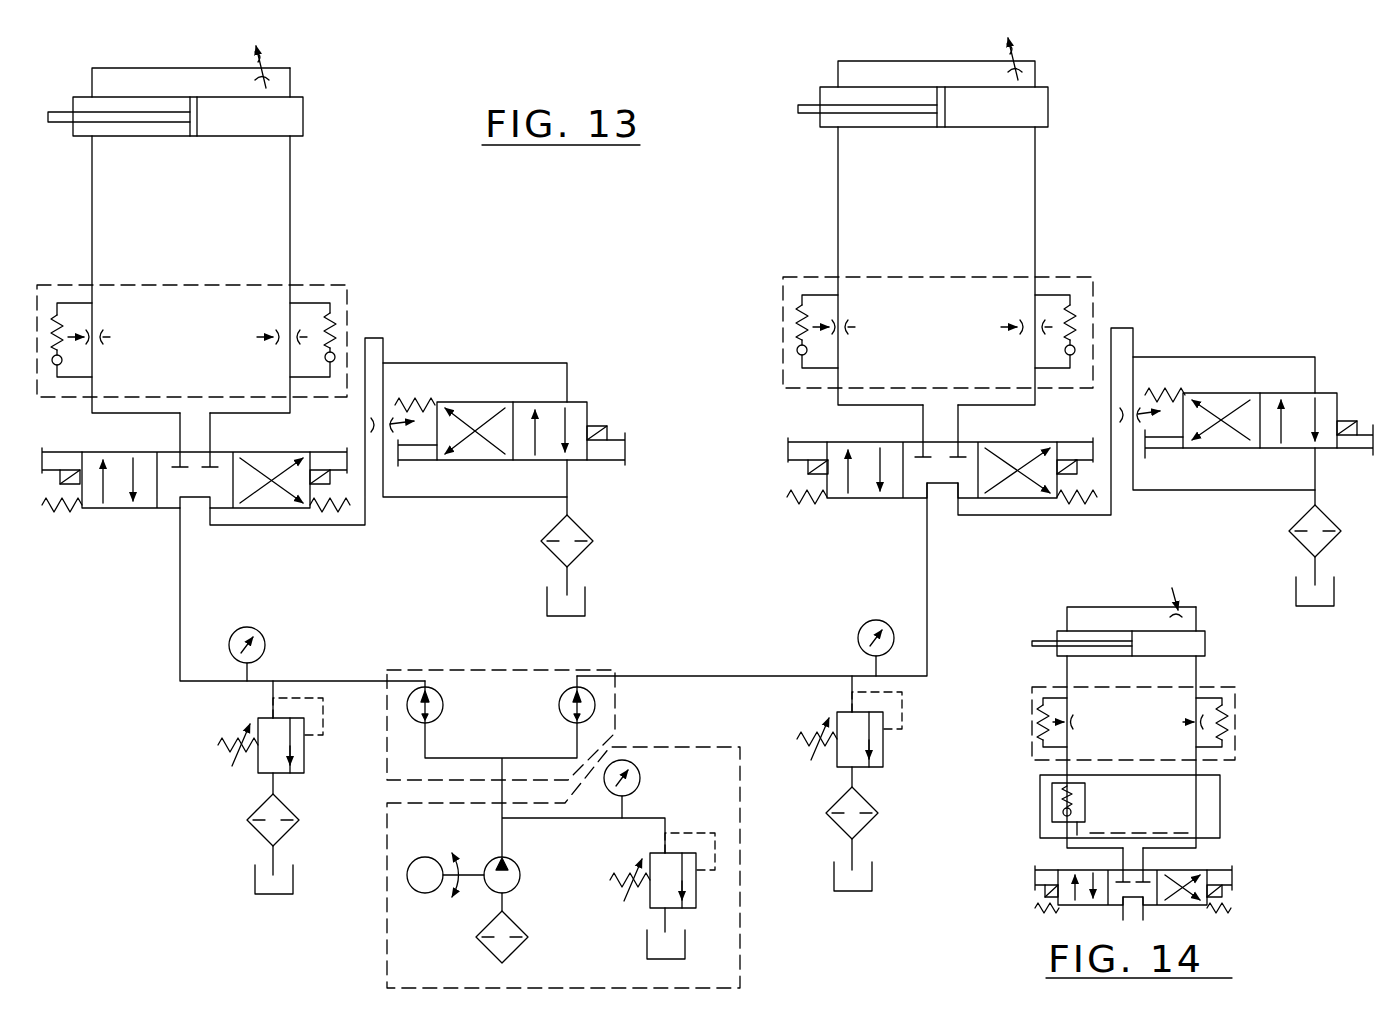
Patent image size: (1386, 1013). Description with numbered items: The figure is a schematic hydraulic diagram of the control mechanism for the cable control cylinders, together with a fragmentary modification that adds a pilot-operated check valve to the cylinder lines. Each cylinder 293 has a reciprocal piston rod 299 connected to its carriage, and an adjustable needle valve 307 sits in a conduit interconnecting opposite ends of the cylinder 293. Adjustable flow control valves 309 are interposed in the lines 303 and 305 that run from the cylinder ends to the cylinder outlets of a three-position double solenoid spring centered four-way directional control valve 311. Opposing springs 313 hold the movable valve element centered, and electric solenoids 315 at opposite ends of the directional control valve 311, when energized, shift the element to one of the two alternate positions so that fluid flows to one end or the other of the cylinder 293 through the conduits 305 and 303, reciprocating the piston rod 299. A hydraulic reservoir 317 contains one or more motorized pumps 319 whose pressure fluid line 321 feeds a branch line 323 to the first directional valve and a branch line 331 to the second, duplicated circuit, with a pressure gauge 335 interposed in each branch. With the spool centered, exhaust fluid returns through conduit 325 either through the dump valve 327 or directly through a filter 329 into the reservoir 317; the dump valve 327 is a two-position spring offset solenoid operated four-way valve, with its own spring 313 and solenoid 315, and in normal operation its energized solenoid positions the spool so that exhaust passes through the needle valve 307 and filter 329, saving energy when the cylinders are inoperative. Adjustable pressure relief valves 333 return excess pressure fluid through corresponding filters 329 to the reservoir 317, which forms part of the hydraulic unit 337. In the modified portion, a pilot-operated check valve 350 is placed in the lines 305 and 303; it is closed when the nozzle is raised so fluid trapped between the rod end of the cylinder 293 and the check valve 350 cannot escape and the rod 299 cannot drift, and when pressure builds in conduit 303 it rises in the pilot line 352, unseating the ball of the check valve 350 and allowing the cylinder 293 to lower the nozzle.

In FIG. 13, the cylinder 293 is at (305, 120).
In FIG. 14, the cylinder 293 is at (1208, 643).
In FIG. 13, the piston rod 299 is at (60, 128).
In FIG. 14, the piston rod 299 is at (1032, 647).
In FIG. 13, the conduit 303 is at (290, 203).
In FIG. 14, the conduit 303 is at (1196, 673).
In FIG. 13, the conduit 305 is at (95, 236).
In FIG. 14, the conduit 305 is at (1067, 677).
In FIG. 13, the adjustable needle valve 307 is at (272, 66).
In FIG. 14, the adjustable needle valve 307 is at (1185, 594).
In FIG. 13, the adjustable flow control valve 309 is at (290, 368).
In FIG. 14, the adjustable flow control valve 309 is at (1196, 738).
In FIG. 13, the four-way directional control valve 311 is at (597, 494).
In FIG. 14, the four-way directional control valve 311 is at (1235, 858).
In FIG. 13, the spring 313 is at (63, 510).
In FIG. 13, the electric solenoid 315 is at (55, 478).
In FIG. 14, the electric solenoid 315 is at (1045, 890).
In FIG. 13, the hydraulic reservoir 317 is at (585, 598).
In FIG. 13, the pump 319 is at (485, 893).
In FIG. 13, the pressure fluid line 321 is at (502, 838).
In FIG. 13, the branch line 323 is at (180, 598).
In FIG. 13, the conduit 325 is at (275, 512).
In FIG. 13, the dump valve 327 is at (567, 382).
In FIG. 13, the filter 329 is at (593, 536).
In FIG. 13, the branch line 331 is at (688, 676).
In FIG. 13, the adjustable pressure relief valve 333 is at (238, 752).
In FIG. 13, the pressure gauge 335 is at (252, 627).
In FIG. 13, the hydraulic unit 337 is at (748, 949).
In FIG. 14, the pilot-operated check valve 350 is at (1040, 820).
In FIG. 14, the pilot line 352 is at (1170, 832).